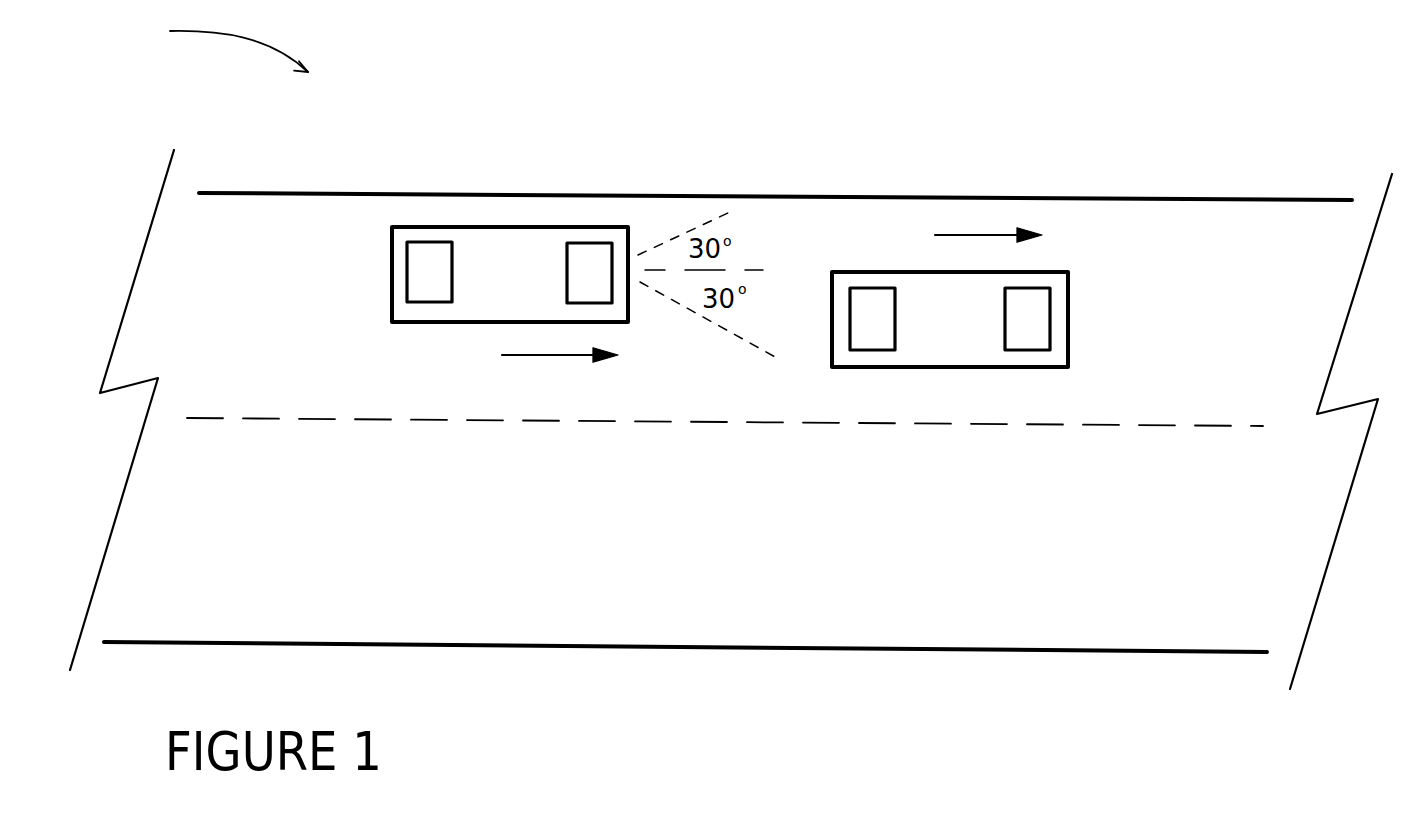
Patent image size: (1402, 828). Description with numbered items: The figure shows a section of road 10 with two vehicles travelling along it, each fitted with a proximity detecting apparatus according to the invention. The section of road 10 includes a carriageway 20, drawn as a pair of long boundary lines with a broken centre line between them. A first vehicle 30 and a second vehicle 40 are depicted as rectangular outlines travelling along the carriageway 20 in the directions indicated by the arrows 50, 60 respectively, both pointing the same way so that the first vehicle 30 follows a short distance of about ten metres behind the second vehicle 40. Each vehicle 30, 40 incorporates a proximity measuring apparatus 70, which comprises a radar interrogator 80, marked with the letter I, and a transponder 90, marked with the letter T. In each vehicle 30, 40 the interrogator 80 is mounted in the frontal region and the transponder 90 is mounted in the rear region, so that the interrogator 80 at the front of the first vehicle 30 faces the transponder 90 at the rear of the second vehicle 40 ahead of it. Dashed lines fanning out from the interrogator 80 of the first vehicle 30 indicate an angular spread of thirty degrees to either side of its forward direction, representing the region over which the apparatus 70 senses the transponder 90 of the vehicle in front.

The section of road 10 is at (218, 47).
The carriageway 20 is at (270, 218).
The first vehicle 30 is at (533, 227).
The second vehicle 40 is at (885, 270).
The arrow 50 is at (547, 357).
The arrow 60 is at (970, 232).
The proximity measuring apparatus 70 is at (733, 258).
The radar interrogator 80 is at (558, 288).
The transponder 90 is at (435, 250).